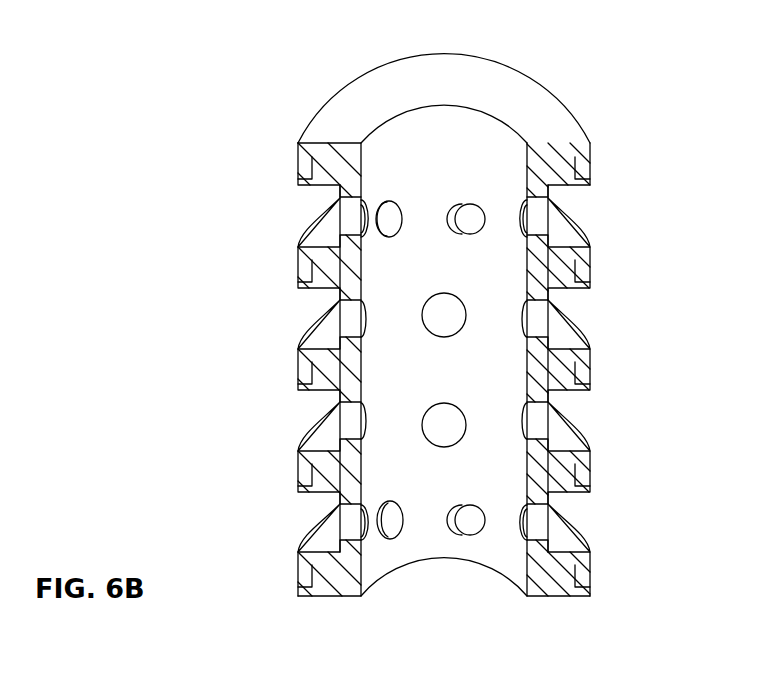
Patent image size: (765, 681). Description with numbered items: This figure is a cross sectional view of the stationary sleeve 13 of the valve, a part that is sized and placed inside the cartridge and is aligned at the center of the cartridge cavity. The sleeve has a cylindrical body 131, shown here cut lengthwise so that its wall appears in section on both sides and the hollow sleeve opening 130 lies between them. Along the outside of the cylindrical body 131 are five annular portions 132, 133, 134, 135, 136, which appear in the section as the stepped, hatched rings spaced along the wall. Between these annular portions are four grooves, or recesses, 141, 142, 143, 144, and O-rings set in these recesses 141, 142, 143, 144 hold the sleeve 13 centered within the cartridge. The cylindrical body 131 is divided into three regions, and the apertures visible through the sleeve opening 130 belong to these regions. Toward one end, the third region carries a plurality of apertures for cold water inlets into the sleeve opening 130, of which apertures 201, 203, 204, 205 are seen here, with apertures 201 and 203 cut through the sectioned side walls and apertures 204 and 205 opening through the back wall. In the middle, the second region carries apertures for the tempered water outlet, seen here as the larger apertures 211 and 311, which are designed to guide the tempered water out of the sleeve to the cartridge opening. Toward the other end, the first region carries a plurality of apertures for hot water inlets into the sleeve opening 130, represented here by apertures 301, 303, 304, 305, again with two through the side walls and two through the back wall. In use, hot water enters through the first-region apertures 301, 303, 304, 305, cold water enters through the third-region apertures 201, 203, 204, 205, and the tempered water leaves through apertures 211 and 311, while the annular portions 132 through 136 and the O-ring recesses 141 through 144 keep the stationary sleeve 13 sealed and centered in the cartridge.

The stationary sleeve 13 is at (222, 88).
The sleeve opening 130 is at (437, 130).
The cylindrical body 131 is at (384, 86).
The annular portion 132 is at (591, 181).
The annular portion 133 is at (591, 272).
The annular portion 134 is at (585, 382).
The annular portion 135 is at (590, 480).
The annular portion 136 is at (588, 588).
The groove 141 is at (299, 166).
The groove 142 is at (298, 264).
The groove 143 is at (298, 468).
The groove 144 is at (298, 570).
The aperture 201 is at (342, 218).
The aperture 203 is at (533, 229).
The aperture 204 is at (412, 186).
The aperture 205 is at (465, 216).
The aperture 211 is at (434, 307).
The aperture 301 is at (350, 520).
The aperture 303 is at (533, 519).
The aperture 304 is at (389, 516).
The aperture 305 is at (467, 517).
The aperture 311 is at (451, 414).